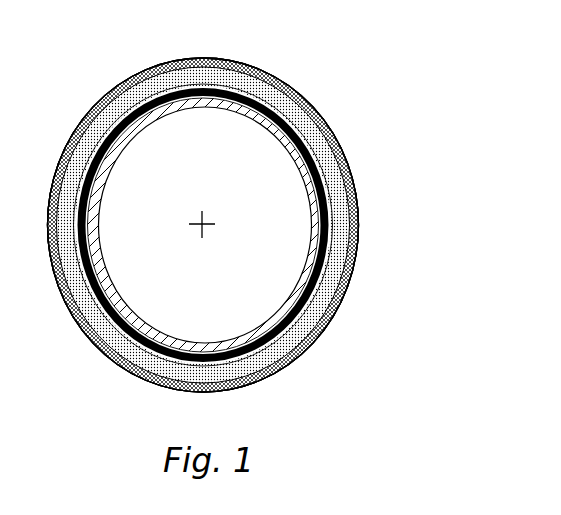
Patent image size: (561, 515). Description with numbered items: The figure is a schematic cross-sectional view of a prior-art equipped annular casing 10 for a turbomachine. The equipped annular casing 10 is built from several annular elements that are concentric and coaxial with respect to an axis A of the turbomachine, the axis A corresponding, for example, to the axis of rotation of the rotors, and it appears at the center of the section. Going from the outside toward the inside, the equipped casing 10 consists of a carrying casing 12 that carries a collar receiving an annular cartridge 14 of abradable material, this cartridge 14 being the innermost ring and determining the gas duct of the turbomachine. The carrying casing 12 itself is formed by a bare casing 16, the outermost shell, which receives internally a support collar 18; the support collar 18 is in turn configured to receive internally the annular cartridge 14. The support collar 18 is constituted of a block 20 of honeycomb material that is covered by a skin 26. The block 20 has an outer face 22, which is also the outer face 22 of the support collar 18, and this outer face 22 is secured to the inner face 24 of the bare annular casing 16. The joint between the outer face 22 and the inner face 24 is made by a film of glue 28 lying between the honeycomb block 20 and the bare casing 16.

The equipped annular casing 10 is at (408, 107).
The carrying casing 12 is at (307, 325).
The annular cartridge of abradable material 14 is at (277, 130).
The bare casing 16 is at (289, 84).
The support collar 18 is at (77, 323).
The block of honeycomb material 20 is at (243, 58).
The outer face 22 is at (137, 76).
The inner face 24 is at (156, 62).
The skin 26 is at (353, 181).
The film of glue 28 is at (100, 112).
The axis A is at (206, 228).